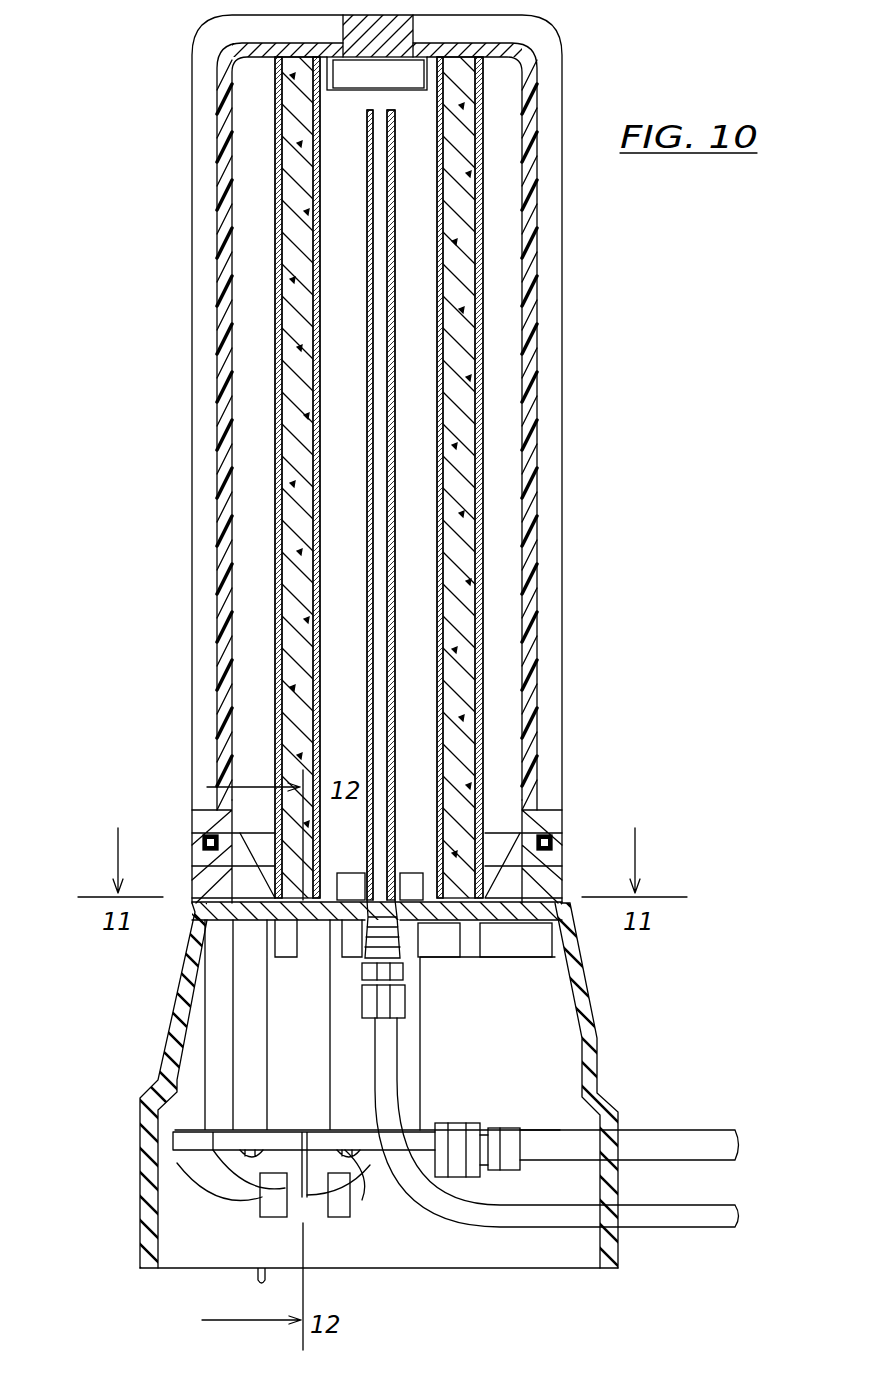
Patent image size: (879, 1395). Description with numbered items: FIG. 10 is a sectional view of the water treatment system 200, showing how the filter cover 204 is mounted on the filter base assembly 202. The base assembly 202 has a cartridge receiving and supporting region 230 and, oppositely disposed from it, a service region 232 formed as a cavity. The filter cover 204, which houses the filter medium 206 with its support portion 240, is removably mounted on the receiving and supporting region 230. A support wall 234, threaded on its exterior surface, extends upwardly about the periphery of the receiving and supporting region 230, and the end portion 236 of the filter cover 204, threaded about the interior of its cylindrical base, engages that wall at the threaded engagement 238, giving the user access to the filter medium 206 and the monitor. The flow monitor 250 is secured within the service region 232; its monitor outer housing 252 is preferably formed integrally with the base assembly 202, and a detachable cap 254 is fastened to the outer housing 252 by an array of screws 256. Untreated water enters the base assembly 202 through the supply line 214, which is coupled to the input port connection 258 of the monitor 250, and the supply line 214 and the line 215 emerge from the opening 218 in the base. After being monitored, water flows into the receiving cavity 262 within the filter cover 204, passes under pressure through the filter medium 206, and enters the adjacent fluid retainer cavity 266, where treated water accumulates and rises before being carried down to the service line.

The system for treating water 200 is at (772, 284).
The filter base assembly 202 is at (163, 1077).
The filter cover 204 is at (192, 290).
The filter medium 206 is at (285, 205).
The supply line 214 is at (657, 1135).
The outlet tube 215 is at (683, 1213).
The opening 218 is at (612, 1250).
The receiving and supporting region 230 is at (557, 862).
The service region 232 is at (545, 1033).
The support wall 234 is at (232, 865).
The end portion 236 is at (192, 848).
The threaded engagement 238 is at (200, 865).
The support portion 240 is at (515, 840).
The flow monitor 250 is at (217, 990).
The monitor outer housing 252 is at (202, 1055).
The detachable cap 254 is at (240, 1195).
The screws 256 is at (200, 1162).
The input port connection 258 is at (455, 1128).
The receiving cavity 262 is at (250, 648).
The fluid retainer cavity 266 is at (345, 447).